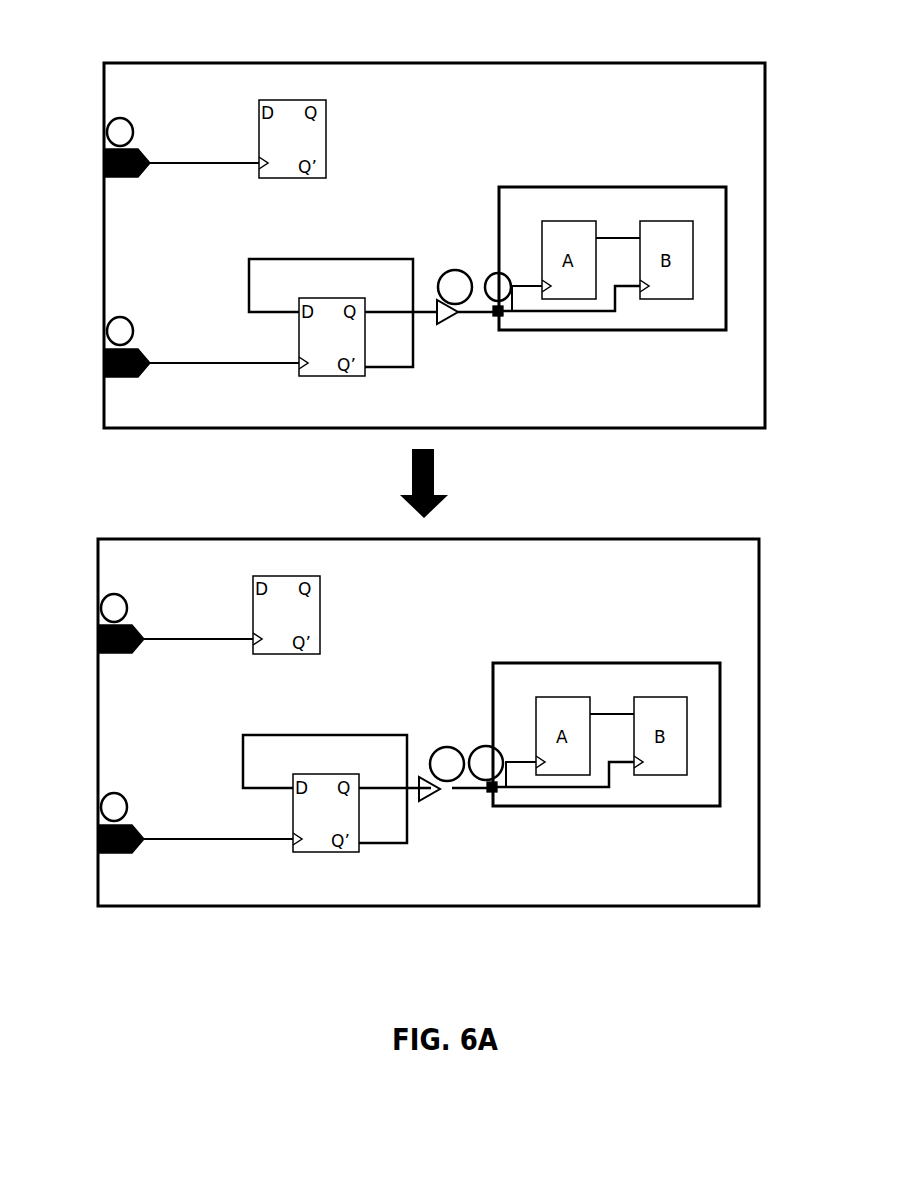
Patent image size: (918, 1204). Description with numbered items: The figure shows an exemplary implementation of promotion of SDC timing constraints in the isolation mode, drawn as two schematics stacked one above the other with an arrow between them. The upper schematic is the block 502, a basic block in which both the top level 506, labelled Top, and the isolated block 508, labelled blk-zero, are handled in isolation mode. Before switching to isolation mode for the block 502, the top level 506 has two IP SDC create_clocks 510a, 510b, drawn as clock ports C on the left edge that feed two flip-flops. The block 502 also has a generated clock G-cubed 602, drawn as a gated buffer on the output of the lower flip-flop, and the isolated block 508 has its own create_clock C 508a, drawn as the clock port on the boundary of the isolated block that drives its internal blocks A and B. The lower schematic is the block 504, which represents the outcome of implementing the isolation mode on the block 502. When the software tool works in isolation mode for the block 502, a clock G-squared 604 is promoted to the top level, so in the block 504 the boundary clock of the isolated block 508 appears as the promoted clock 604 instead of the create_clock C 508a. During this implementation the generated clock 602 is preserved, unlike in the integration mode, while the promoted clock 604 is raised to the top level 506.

The block 502 is at (765, 259).
The block 504 is at (759, 727).
The top level 506 is at (196, 83).
The isolated block 508 is at (551, 333).
The create_clock C 508a is at (488, 268).
The create_clock 510a is at (105, 137).
The create_clock 510b is at (106, 345).
The generated clock G3 602 is at (457, 303).
The clock G2 604 is at (482, 743).